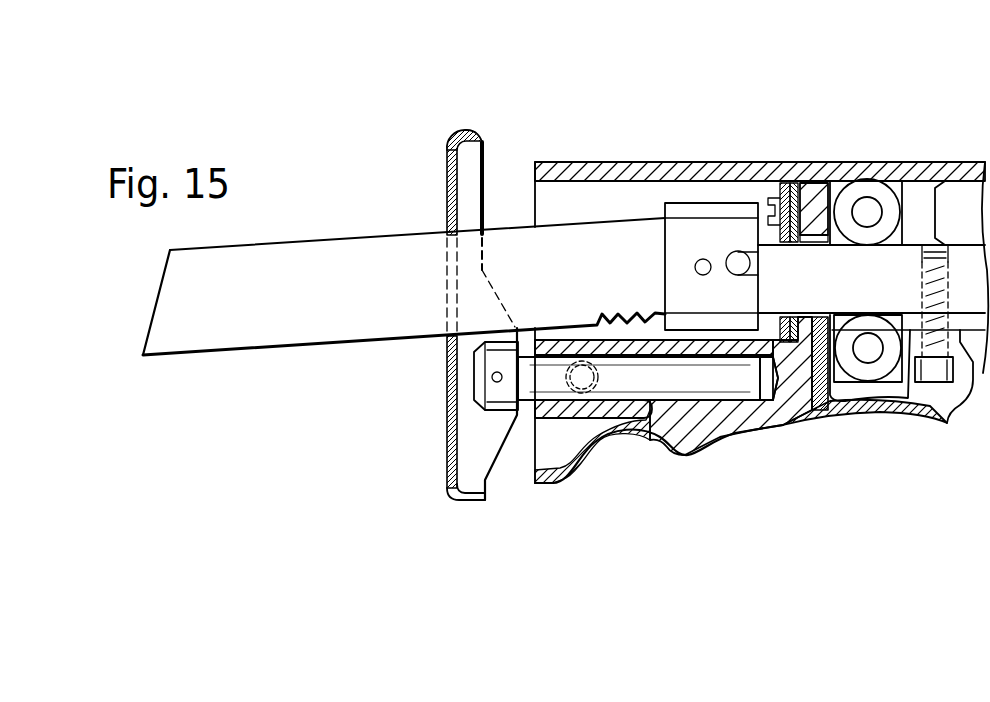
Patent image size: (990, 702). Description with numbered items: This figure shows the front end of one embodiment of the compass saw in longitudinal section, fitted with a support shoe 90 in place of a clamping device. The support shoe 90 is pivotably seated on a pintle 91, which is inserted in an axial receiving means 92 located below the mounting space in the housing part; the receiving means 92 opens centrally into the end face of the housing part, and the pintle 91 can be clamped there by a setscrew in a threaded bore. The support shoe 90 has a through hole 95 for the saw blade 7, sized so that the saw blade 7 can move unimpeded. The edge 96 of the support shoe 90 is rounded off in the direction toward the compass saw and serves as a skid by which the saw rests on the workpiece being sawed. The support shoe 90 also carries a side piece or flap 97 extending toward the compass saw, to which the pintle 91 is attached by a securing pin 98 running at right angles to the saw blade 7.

The saw blade 7 is at (260, 327).
The support shoe 90 is at (452, 142).
The pintle 91 is at (722, 386).
The axial receiving means 92 is at (738, 402).
The through hole 95 is at (452, 205).
The edge 96 is at (452, 500).
The side piece or flap 97 is at (493, 446).
The securing pin 98 is at (490, 376).